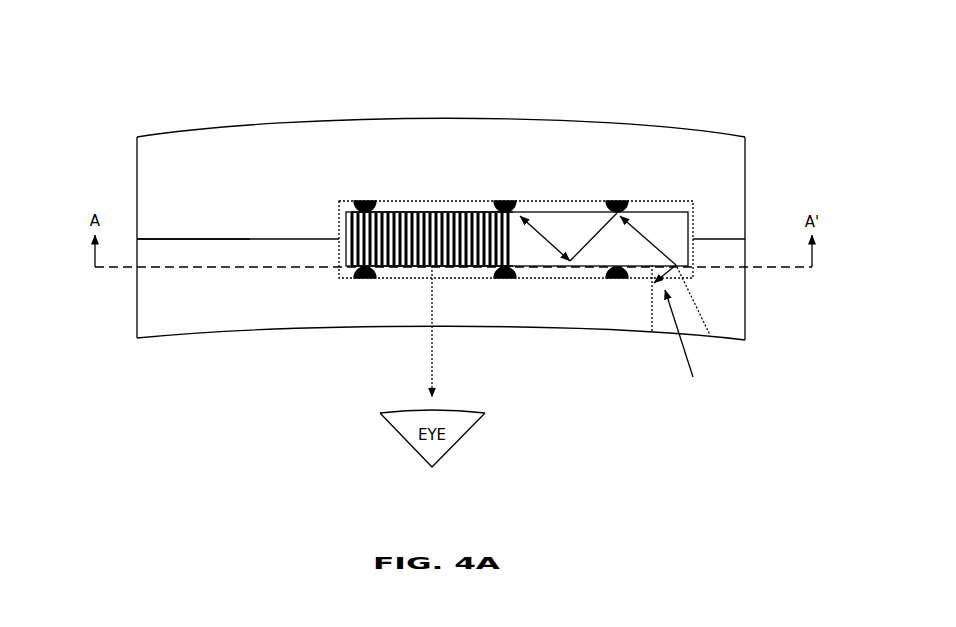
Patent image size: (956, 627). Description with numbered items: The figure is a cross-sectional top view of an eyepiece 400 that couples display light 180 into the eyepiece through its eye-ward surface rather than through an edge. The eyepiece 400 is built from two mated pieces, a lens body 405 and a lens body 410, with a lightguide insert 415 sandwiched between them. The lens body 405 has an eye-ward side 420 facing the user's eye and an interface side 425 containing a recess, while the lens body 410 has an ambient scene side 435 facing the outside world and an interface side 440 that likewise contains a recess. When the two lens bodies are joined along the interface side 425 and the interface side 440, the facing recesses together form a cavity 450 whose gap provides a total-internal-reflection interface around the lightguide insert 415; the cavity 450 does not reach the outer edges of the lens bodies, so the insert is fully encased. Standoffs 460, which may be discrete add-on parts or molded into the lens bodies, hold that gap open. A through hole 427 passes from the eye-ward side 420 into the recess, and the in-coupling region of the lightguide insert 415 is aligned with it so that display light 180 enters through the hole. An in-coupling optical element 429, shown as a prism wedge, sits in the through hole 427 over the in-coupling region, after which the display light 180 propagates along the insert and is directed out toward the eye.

The eyepiece 400 is at (415, 190).
The lens body 405 is at (189, 320).
The lens body 410 is at (189, 193).
The lightguide insert 415 is at (582, 239).
The eye-ward side 420 is at (212, 373).
The interface side 425 is at (158, 238).
The through hole 427 is at (670, 327).
The in-coupling optical element 429 is at (652, 283).
The ambient scene side 435 is at (337, 107).
The interface side 440 is at (148, 238).
The cavity 450 is at (468, 210).
The standoffs 460 is at (621, 212).
The display light 180 is at (432, 343).